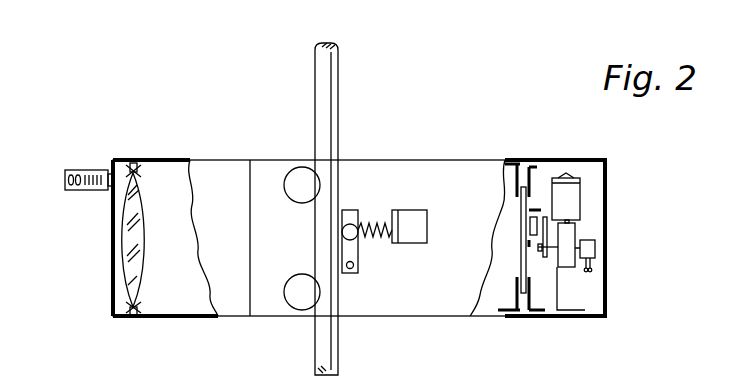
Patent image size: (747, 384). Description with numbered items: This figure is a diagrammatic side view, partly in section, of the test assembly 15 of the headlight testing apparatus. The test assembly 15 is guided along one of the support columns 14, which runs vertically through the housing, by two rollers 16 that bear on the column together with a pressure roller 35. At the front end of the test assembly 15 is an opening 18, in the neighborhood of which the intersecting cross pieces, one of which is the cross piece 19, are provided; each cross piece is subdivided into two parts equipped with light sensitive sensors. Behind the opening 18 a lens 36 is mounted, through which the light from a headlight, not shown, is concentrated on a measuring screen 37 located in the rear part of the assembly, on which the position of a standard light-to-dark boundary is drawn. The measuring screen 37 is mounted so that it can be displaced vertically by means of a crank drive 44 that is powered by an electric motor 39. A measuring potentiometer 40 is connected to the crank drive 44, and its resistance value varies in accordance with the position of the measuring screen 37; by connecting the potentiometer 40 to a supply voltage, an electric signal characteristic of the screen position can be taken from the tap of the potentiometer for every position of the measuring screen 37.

The support column 14 is at (325, 99).
The test assembly 15 is at (271, 111).
The rollers 16 is at (298, 178).
The opening 18 is at (117, 272).
The cross piece 19 is at (100, 172).
The pressure roller 35 is at (353, 236).
The lens 36 is at (132, 236).
The measuring screen 37 is at (522, 235).
The electric motor 39 is at (572, 197).
The measuring potentiometer 40 is at (588, 248).
The crank drive 44 is at (545, 216).